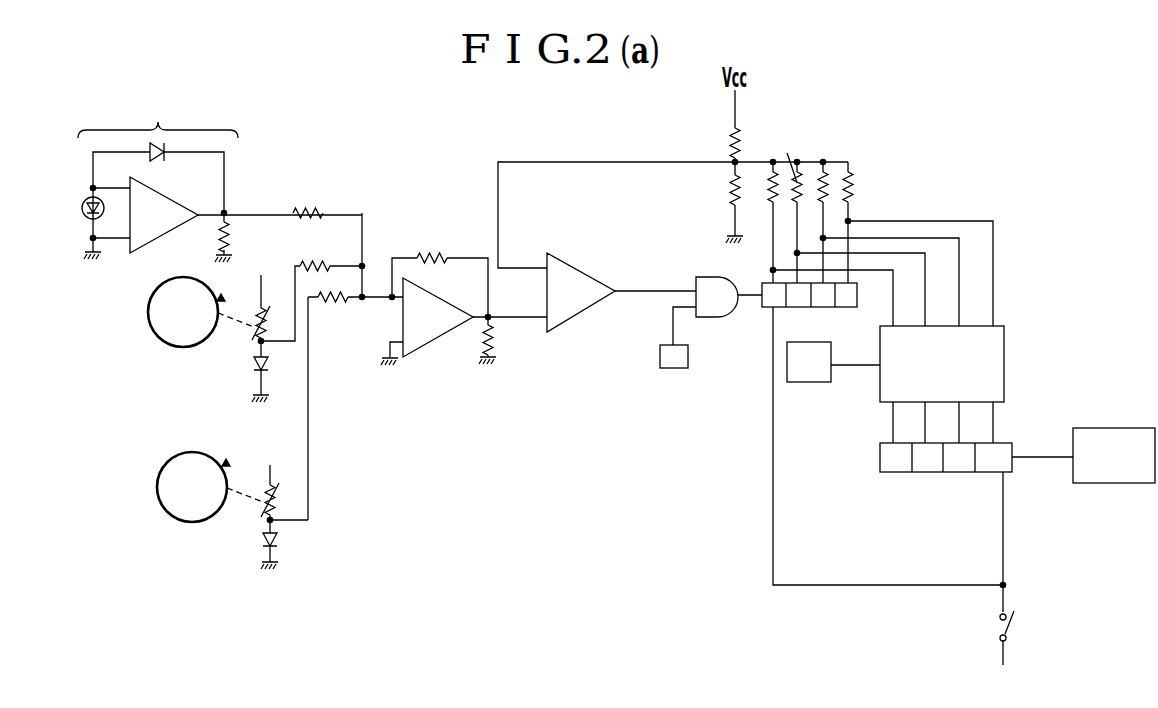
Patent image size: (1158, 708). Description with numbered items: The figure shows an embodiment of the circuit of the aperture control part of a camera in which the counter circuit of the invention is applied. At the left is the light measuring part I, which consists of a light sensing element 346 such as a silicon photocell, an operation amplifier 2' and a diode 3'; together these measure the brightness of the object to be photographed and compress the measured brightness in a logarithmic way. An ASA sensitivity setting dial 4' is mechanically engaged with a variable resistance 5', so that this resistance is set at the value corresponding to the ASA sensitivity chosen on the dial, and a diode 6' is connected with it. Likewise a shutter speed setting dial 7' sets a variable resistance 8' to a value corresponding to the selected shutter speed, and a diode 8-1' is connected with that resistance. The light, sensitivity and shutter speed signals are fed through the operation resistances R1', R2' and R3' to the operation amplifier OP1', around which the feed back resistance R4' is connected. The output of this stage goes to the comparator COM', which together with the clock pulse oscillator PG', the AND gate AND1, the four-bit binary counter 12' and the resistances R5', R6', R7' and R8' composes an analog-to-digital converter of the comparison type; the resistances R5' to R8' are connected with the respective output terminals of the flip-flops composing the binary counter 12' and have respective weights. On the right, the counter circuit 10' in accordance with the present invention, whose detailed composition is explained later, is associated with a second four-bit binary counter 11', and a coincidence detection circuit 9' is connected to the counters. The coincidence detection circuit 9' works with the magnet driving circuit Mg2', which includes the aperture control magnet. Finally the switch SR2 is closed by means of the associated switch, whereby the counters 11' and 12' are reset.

The light measuring part I is at (158, 112).
The light sensing element 346 is at (78, 213).
The operation amplifier 2' is at (223, 219).
The diode 3' is at (158, 178).
The ASA sensitivity setting dial 4' is at (187, 327).
The variable resistance 5' is at (304, 295).
The diode 6' is at (270, 371).
The shutter speed setting dial 7' is at (195, 503).
The variable resistance 8' is at (282, 480).
The diode 8-1' is at (301, 544).
The operation resistance R1' is at (309, 200).
The operation resistance R2' is at (318, 254).
The operation resistance R3' is at (335, 406).
The feed back resistance R4' is at (440, 271).
The resistor R5' is at (762, 205).
The resistor R6' is at (788, 205).
The resistor R7' is at (815, 205).
The resistor R8' is at (840, 205).
The operation amplifier OP1' is at (453, 299).
The comparator COM' is at (673, 247).
The AND gate AND1 is at (717, 311).
The clock pulse oscillator PG' is at (676, 383).
The 4-bit binary counter 12' is at (882, 401).
The magnet driving circuit Mg2' is at (833, 362).
The coincidence detection circuit 9' is at (942, 384).
The counter circuit 10' is at (1114, 455).
The 4-bit binary counter 11' is at (976, 527).
The switch SR2 is at (1017, 640).